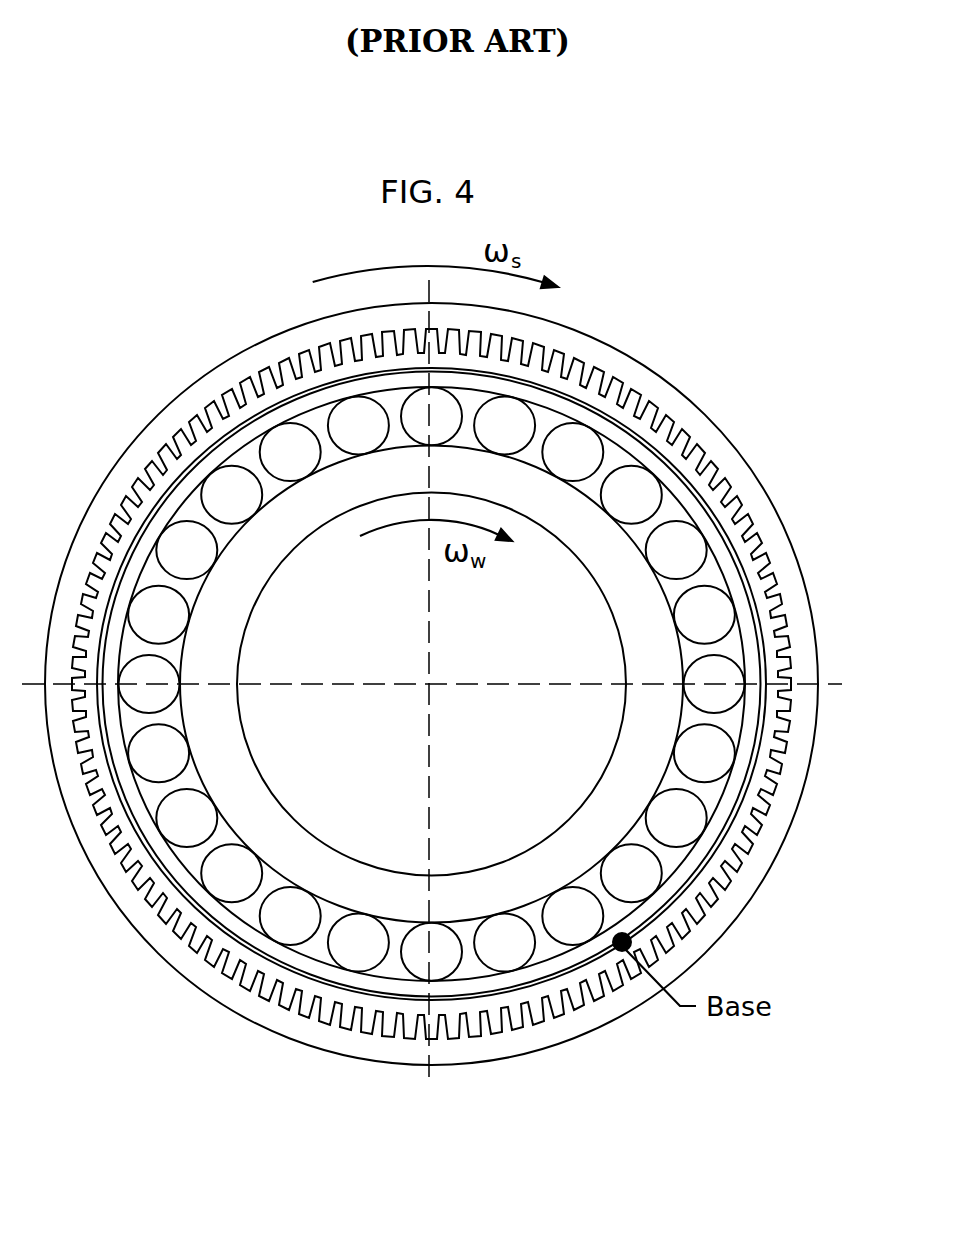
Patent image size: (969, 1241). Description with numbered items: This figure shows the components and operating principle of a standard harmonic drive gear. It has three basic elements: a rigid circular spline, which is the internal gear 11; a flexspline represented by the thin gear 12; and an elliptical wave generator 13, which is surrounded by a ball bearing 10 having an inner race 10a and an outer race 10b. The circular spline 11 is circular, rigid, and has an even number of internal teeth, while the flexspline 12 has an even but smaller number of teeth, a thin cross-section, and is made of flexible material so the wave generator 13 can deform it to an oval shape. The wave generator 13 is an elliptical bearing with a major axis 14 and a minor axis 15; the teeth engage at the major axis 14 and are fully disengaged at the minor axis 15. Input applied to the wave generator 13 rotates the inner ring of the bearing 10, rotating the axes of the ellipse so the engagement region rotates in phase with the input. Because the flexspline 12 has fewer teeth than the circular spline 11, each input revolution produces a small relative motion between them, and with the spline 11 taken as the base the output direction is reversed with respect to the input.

The ball bearing 10 is at (482, 684).
The inner race 10a is at (663, 658).
The outer race 10b is at (688, 492).
The circular spline 11 is at (665, 385).
The flexspline 12 is at (88, 565).
The wave generator 13 is at (183, 545).
The major axis 14 is at (298, 688).
The minor axis 15 is at (428, 795).